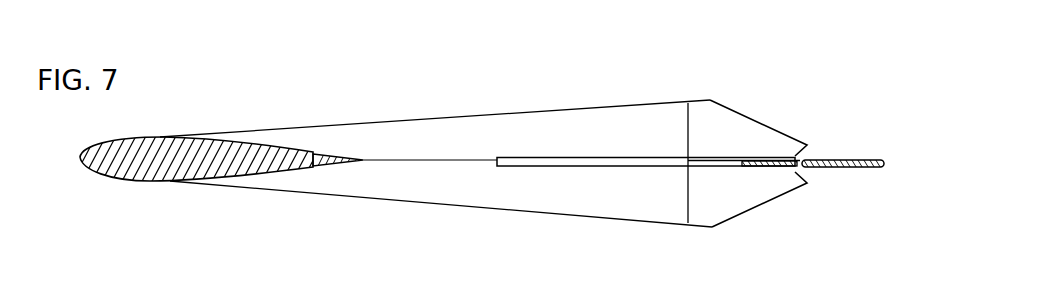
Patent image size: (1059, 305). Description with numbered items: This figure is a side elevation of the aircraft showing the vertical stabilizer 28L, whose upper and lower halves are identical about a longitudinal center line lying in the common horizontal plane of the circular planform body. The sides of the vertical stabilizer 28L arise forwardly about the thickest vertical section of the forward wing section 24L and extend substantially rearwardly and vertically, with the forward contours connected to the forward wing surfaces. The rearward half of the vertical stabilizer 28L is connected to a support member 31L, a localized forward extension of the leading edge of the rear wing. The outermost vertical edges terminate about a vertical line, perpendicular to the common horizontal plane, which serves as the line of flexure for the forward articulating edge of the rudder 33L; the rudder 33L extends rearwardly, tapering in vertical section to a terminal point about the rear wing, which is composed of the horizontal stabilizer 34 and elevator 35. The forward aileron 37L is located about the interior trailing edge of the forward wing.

The forward wing section 24L is at (203, 147).
The vertical stabilizer 28L is at (803, 107).
The support member 31L is at (520, 160).
The rudder 33L is at (712, 113).
The horizontal stabilizer 34 is at (772, 167).
The elevator 35 is at (830, 158).
The forward aileron 37L is at (330, 153).